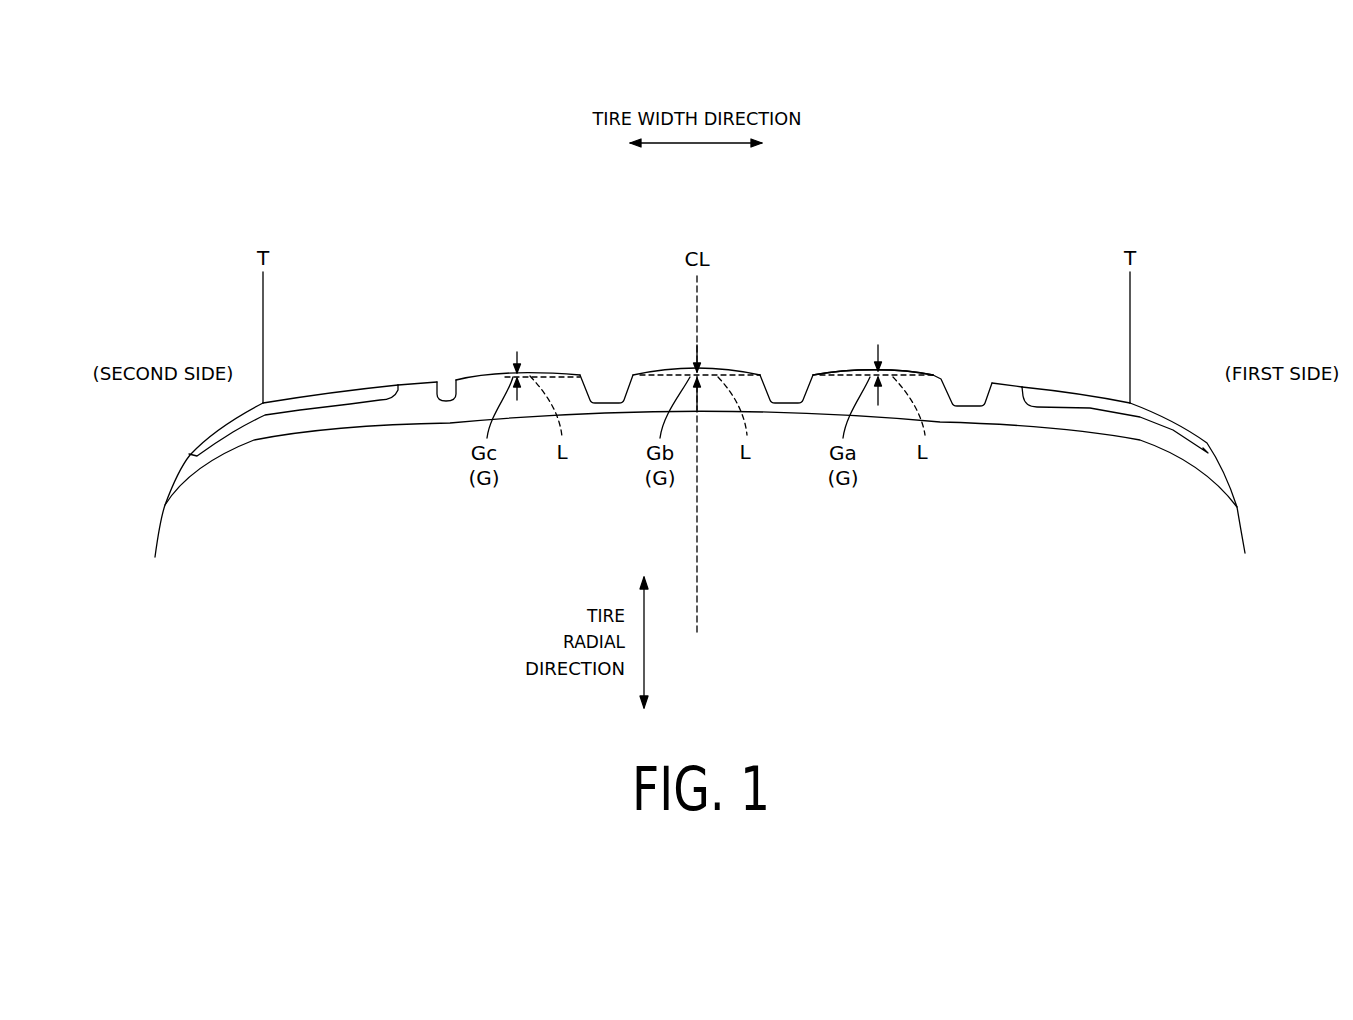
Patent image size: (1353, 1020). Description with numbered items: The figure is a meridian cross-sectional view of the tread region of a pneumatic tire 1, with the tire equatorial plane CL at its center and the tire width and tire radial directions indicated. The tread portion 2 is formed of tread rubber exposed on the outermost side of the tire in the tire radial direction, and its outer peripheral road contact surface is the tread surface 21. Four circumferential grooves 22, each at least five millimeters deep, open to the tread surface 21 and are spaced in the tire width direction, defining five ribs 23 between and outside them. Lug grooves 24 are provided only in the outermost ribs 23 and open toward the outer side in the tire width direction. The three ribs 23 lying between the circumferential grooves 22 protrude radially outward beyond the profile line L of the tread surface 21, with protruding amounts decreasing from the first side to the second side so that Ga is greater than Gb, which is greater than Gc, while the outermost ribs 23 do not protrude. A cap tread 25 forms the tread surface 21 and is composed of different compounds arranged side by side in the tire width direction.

The pneumatic tire 1 is at (960, 230).
The tread portion 2 is at (827, 397).
The tread surface 21 is at (904, 360).
The circumferential groove 22 is at (452, 380).
The rib 23 is at (350, 382).
The lug groove 24 is at (300, 410).
The cap tread 25 is at (420, 397).